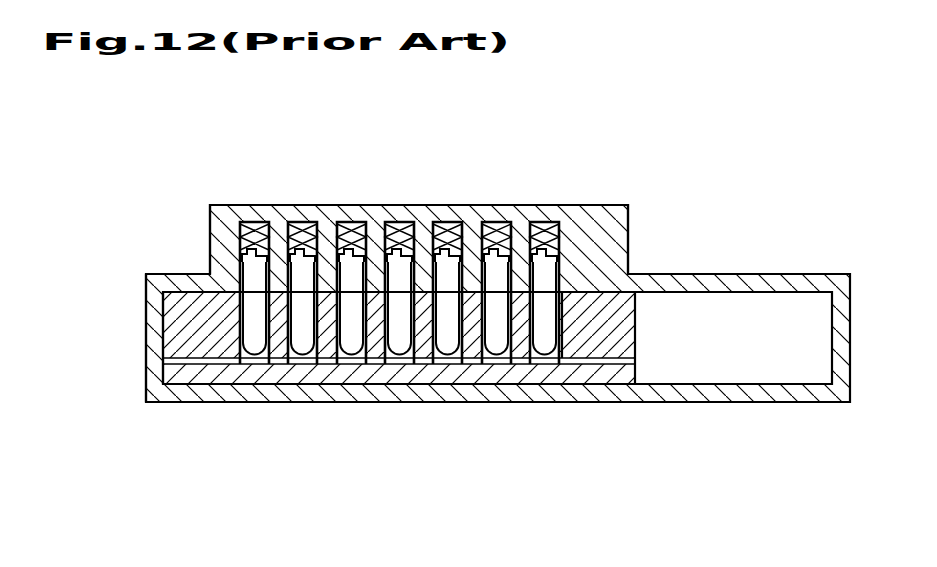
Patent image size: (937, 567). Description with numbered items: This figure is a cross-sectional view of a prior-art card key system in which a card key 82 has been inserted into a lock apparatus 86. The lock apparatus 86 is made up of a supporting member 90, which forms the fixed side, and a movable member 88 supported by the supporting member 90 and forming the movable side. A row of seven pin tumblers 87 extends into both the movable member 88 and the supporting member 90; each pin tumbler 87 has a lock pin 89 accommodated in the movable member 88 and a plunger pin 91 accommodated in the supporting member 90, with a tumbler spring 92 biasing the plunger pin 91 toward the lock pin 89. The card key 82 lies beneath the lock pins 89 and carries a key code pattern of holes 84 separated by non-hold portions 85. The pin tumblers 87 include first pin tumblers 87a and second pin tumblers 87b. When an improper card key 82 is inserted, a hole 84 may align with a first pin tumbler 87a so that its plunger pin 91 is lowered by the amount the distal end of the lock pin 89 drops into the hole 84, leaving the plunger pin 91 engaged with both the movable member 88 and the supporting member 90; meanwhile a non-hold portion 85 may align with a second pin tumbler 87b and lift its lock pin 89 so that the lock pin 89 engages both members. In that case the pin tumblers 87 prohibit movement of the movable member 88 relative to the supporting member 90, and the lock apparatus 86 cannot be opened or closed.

The card key 82 is at (210, 378).
The hole 84 is at (292, 388).
The non-hold portion 85 is at (248, 376).
The lock apparatus 86 is at (210, 223).
The pin tumbler 87 is at (245, 307).
The first pin tumbler 87a is at (562, 298).
The second pin tumbler 87b is at (560, 322).
The movable member 88 is at (178, 392).
The lock pin 89 is at (540, 364).
The supporting member 90 is at (148, 290).
The plunger pin 91 is at (542, 252).
The tumbler spring 92 is at (246, 238).